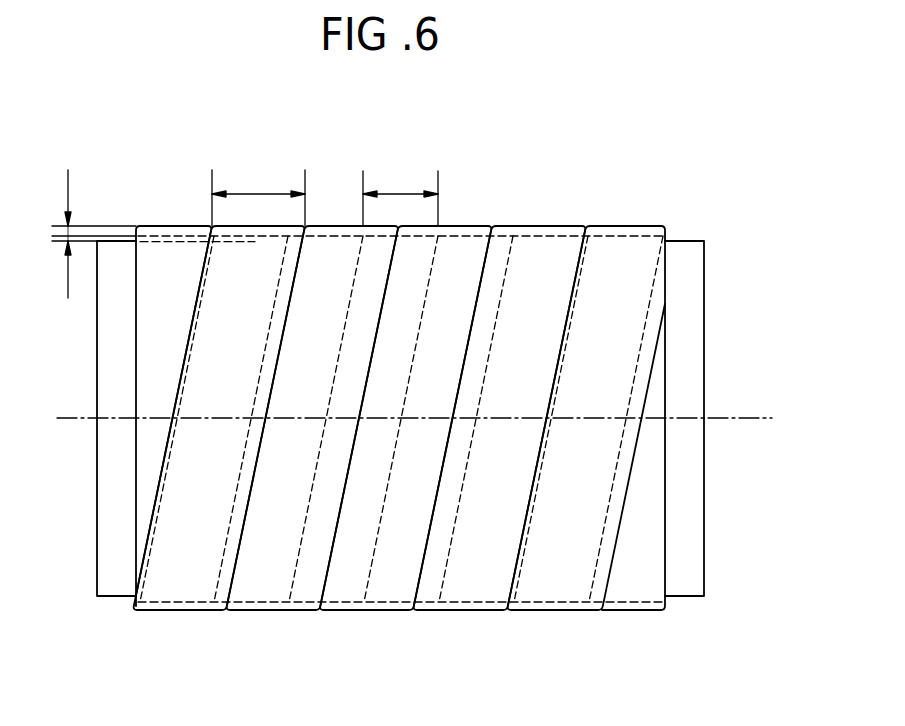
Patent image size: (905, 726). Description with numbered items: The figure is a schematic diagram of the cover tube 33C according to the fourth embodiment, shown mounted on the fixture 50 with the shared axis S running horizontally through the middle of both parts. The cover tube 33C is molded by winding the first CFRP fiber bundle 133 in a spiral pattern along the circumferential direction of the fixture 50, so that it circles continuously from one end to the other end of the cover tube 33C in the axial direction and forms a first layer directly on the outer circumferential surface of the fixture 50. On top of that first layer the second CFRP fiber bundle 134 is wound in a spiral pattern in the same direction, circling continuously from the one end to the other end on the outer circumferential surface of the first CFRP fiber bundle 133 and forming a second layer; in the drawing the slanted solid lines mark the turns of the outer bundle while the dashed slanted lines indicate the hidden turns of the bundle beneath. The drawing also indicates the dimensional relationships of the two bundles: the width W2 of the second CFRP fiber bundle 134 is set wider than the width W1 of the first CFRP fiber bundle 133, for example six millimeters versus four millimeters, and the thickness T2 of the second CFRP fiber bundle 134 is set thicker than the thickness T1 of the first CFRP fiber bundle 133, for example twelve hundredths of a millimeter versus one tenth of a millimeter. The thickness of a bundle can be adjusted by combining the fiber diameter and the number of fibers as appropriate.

The cover tube 33C is at (399, 346).
The first CFRP fiber bundle 133 is at (549, 226).
The second CFRP fiber bundle 134 is at (341, 226).
The fixture 50 is at (703, 289).
The axis (center line) of the roller S is at (735, 420).
The thickness of the first CFRP fiber bundle T1 is at (65, 269).
The thickness of the second CFRP fiber bundle T2 is at (85, 205).
The width of the first CFRP fiber bundle W1 is at (400, 194).
The width of the second CFRP fiber bundle W2 is at (258, 195).